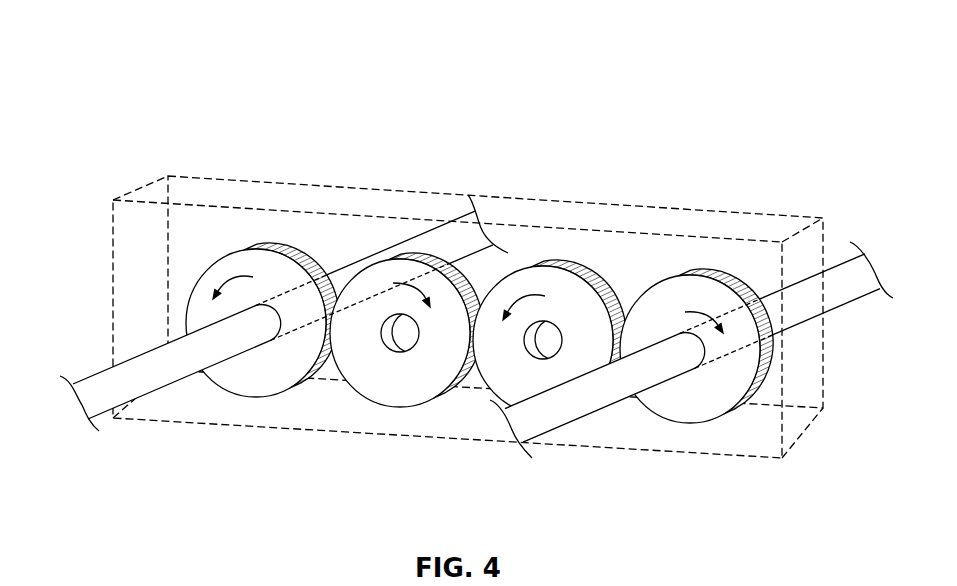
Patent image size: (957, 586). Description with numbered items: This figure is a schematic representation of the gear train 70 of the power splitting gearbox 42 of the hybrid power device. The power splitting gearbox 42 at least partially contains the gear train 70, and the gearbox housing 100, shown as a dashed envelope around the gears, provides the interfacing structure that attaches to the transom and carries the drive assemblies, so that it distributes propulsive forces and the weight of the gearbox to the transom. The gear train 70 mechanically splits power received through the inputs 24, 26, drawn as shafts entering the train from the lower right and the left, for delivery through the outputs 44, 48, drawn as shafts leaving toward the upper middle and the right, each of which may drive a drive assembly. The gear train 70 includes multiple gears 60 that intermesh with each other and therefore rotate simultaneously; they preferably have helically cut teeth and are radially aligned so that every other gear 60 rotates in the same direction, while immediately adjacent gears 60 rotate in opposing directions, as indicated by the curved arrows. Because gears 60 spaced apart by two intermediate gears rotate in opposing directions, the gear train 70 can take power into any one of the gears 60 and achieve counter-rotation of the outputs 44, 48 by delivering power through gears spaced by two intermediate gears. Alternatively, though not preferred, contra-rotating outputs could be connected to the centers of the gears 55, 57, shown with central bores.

The power splitting gearbox 42 is at (504, 61).
The output 44 is at (418, 236).
The gearbox housing 100 is at (768, 217).
The input 26 is at (118, 363).
The gears 60 is at (244, 377).
The output 48 is at (848, 301).
The gear train 70 is at (196, 454).
The gear 55 is at (387, 348).
The gear 57 is at (529, 353).
The input 24 is at (580, 420).